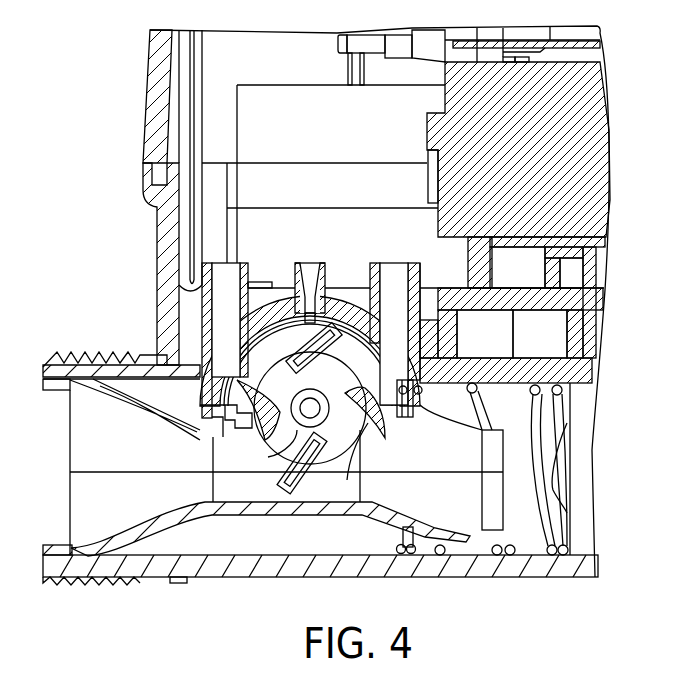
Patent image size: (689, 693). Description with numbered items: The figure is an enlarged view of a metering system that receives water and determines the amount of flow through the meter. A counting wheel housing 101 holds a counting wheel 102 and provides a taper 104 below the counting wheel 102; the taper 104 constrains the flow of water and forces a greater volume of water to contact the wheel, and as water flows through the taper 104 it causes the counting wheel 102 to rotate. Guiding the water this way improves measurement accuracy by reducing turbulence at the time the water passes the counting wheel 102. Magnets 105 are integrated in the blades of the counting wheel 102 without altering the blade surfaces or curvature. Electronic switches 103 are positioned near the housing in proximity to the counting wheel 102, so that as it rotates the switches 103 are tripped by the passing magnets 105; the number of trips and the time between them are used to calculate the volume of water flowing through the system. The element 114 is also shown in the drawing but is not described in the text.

The counting wheel housing 101 is at (214, 433).
The counting wheel 102 is at (268, 452).
The electronic switch 103 is at (220, 292).
The taper 104 is at (224, 480).
The magnet 105 is at (318, 338).
The tube 114 is at (313, 275).